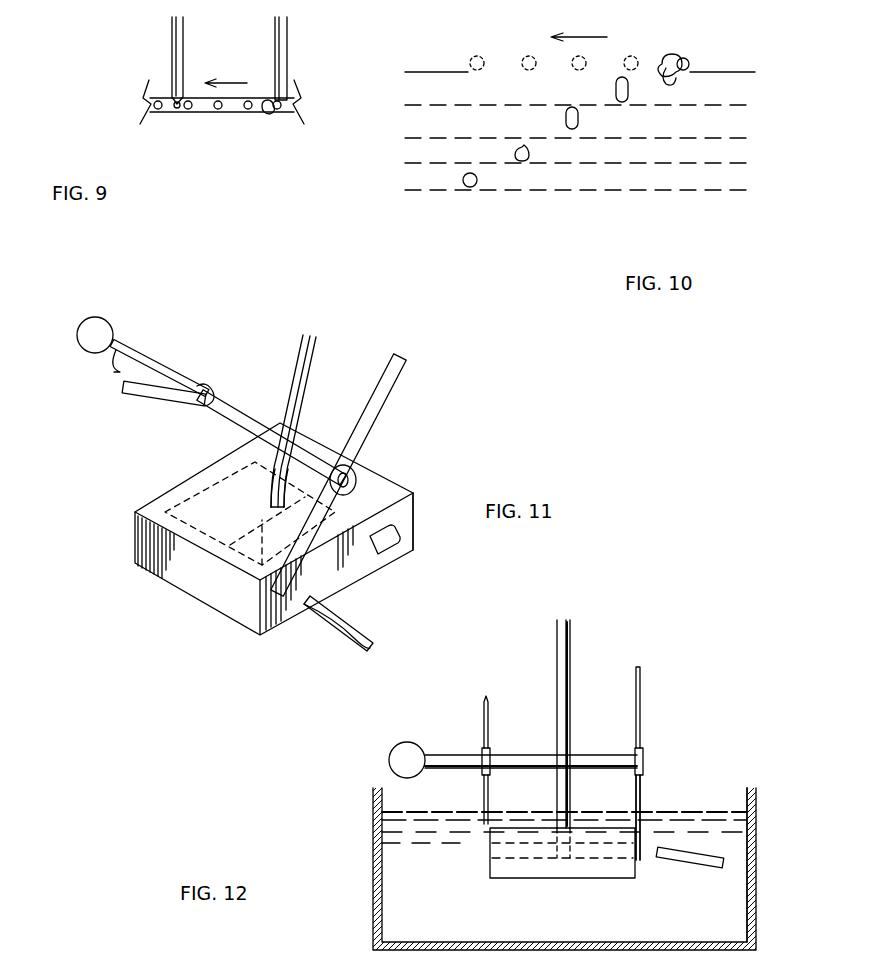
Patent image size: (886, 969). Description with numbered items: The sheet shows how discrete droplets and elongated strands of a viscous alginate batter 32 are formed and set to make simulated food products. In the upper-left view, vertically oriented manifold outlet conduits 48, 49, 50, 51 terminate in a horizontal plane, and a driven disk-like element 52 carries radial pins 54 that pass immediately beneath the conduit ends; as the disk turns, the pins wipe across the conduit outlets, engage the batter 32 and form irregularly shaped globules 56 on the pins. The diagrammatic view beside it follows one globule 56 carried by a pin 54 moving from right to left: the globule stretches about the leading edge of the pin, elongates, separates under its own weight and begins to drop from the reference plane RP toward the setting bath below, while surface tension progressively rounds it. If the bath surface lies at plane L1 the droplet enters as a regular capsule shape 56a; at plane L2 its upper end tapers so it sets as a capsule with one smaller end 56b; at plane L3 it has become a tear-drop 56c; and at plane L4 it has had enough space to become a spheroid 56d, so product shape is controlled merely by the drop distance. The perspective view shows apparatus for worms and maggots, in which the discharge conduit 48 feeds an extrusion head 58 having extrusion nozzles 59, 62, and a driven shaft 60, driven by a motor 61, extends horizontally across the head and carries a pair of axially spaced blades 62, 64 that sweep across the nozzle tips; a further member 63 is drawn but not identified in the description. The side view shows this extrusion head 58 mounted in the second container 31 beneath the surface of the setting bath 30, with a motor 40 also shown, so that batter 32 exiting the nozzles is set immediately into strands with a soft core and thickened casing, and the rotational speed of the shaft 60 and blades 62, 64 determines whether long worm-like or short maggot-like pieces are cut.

In FIG. 12, the setting bath 30 is at (706, 920).
In FIG. 12, the second container 31 is at (757, 885).
In FIG. 9, the batter 32 is at (180, 113).
In FIG. 12, the motor 40 is at (565, 650).
In FIG. 9, the manifold outlet conduit 48 is at (327, 58).
In FIG. 11, the manifold outlet conduit 48 is at (308, 370).
In FIG. 9, the manifold outlet conduit 49 is at (105, 62).
In FIG. 9, the manifold outlet conduit 50 is at (172, 54).
In FIG. 9, the manifold outlet conduit 51 is at (290, 55).
In FIG. 9, the driven disk-like element 52 is at (248, 96).
In FIG. 9, the radial pin 54 is at (220, 112).
In FIG. 10, the radial pin 54 is at (685, 62).
In FIG. 9, the globule 56 is at (272, 116).
In FIG. 10, the globule 56 is at (674, 60).
In FIG. 10, the capsule-shaped product 56a is at (616, 90).
In FIG. 10, the tapered capsule-shaped product 56b is at (568, 117).
In FIG. 10, the tear-drop shaped product 56c is at (516, 152).
In FIG. 10, the spheroid product 56d is at (462, 179).
In FIG. 11, the extrusion head 58 is at (413, 493).
In FIG. 12, the extrusion head 58 is at (561, 872).
In FIG. 11, the extrusion nozzle 59 is at (350, 520).
In FIG. 12, the extrusion nozzle 59 is at (673, 842).
In FIG. 11, the driven shaft 60 is at (150, 364).
In FIG. 12, the driven shaft 60 is at (618, 856).
In FIG. 11, the motor 61 is at (101, 324).
In FIG. 12, the motor 61 is at (514, 858).
In FIG. 11, the blade 62 is at (250, 464).
In FIG. 12, the blade 62 is at (516, 788).
In FIG. 11, the rod 63 is at (139, 398).
In FIG. 11, the blade 64 is at (380, 397).
In FIG. 10, the reference plane RP is at (755, 72).
In FIG. 10, the first reference plane L1 is at (755, 105).
In FIG. 10, the second reference plane L2 is at (755, 138).
In FIG. 10, the third reference plane L3 is at (755, 163).
In FIG. 10, the fourth reference plane L4 is at (755, 190).